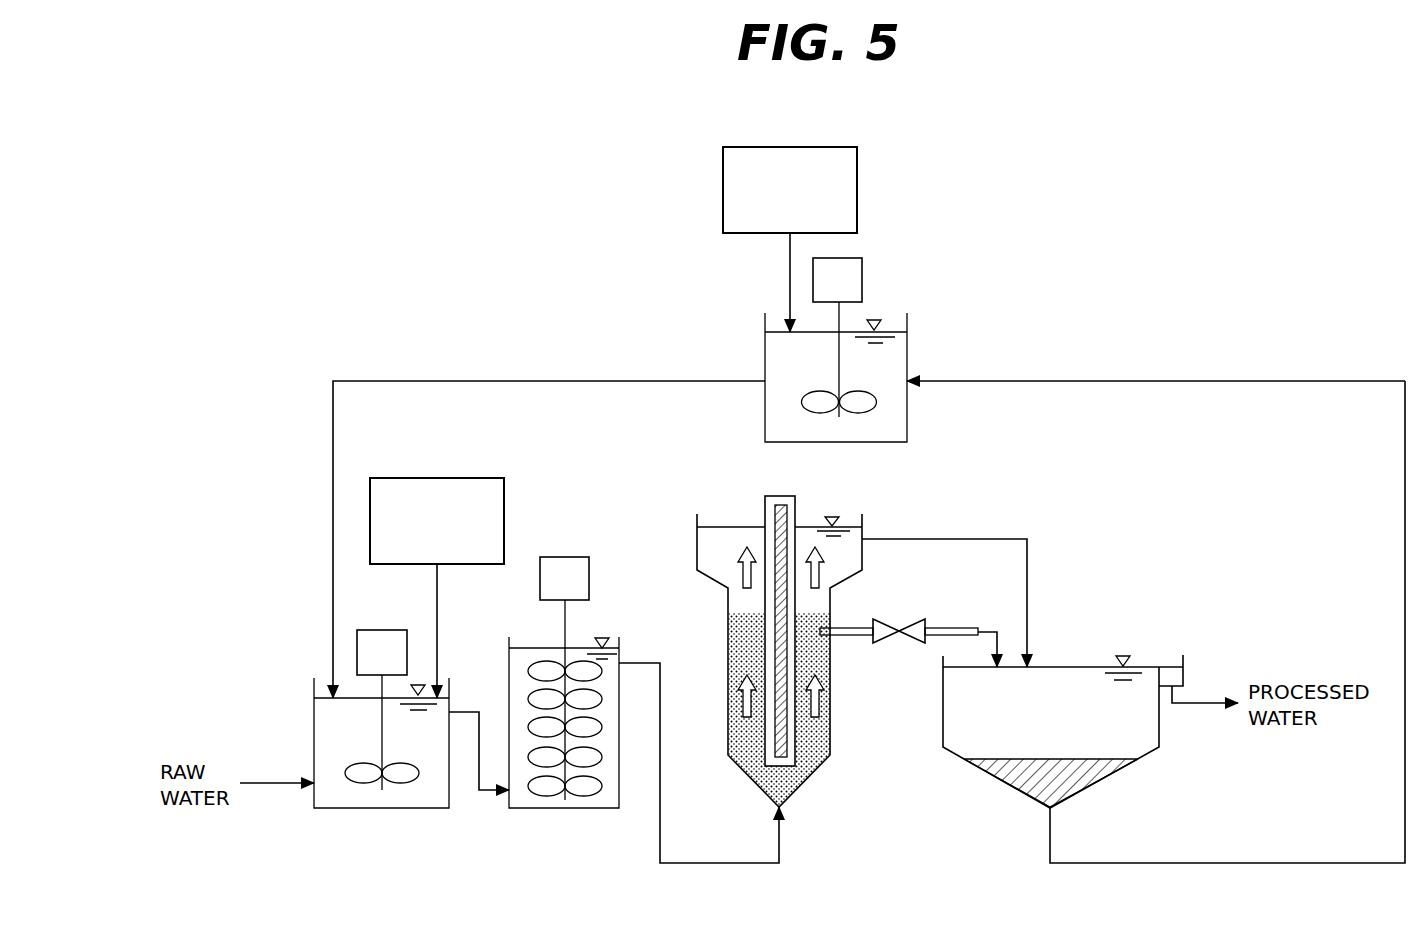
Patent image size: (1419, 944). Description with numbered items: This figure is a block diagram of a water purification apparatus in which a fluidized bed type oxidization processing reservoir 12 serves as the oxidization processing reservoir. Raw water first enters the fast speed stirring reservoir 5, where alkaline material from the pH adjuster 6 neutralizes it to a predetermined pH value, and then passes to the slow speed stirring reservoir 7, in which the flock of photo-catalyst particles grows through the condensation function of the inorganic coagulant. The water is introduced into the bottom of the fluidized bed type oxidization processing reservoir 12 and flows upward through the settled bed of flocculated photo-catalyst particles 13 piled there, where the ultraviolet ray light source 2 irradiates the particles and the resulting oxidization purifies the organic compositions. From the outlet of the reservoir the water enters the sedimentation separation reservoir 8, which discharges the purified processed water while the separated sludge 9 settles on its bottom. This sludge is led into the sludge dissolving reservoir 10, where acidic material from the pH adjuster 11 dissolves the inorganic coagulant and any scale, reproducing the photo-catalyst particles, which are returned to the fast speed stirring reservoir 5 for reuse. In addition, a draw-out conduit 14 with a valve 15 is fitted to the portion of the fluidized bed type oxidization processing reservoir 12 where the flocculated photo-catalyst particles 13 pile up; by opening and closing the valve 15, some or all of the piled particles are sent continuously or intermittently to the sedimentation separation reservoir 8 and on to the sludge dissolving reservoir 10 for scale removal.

The ultraviolet ray light source 2 is at (795, 500).
The fast speed stirring reservoir 5 is at (383, 808).
The pH adjuster 6 is at (504, 519).
The slow speed stirring reservoir 7 is at (566, 808).
The sedimentation separation reservoir 8 is at (1150, 755).
The separated sludge 9 is at (1010, 775).
The sludge dissolving reservoir 10 is at (907, 350).
The pH adjuster 11 is at (857, 186).
The fluidized bed type oxidization processing reservoir 12 is at (810, 778).
The packed filler 13 is at (823, 735).
The draw-out conduit 14 is at (960, 627).
The valve 15 is at (904, 647).